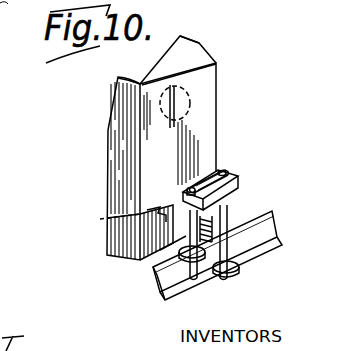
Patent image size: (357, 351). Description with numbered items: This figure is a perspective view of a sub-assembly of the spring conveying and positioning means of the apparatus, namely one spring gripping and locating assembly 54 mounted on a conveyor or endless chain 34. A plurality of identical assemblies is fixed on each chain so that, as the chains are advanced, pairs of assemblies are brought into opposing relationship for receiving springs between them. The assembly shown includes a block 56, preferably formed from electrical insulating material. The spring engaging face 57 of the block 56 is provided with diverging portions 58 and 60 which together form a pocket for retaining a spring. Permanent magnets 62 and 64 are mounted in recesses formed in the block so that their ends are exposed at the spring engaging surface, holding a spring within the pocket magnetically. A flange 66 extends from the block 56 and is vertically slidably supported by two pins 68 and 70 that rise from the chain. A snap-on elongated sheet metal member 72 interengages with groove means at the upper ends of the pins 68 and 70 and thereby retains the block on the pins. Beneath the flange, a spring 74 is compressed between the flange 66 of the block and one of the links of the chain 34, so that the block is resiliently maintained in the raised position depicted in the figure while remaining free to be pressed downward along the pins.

The conveyor or endless chain 34 is at (252, 214).
The spring gripping and locating assembly 54 is at (99, 199).
The block 56 is at (122, 244).
The spring engaging face 57 is at (152, 63).
The diverging portion 58 is at (133, 69).
The diverging portion 60 is at (199, 21).
The permanent magnet 62 is at (106, 222).
The permanent magnet 64 is at (187, 97).
The flange 66 is at (240, 184).
The pin 68 is at (160, 250).
The pin 70 is at (205, 226).
The snap-on elongated sheet metal member 72 is at (224, 172).
The spring 74 is at (200, 262).